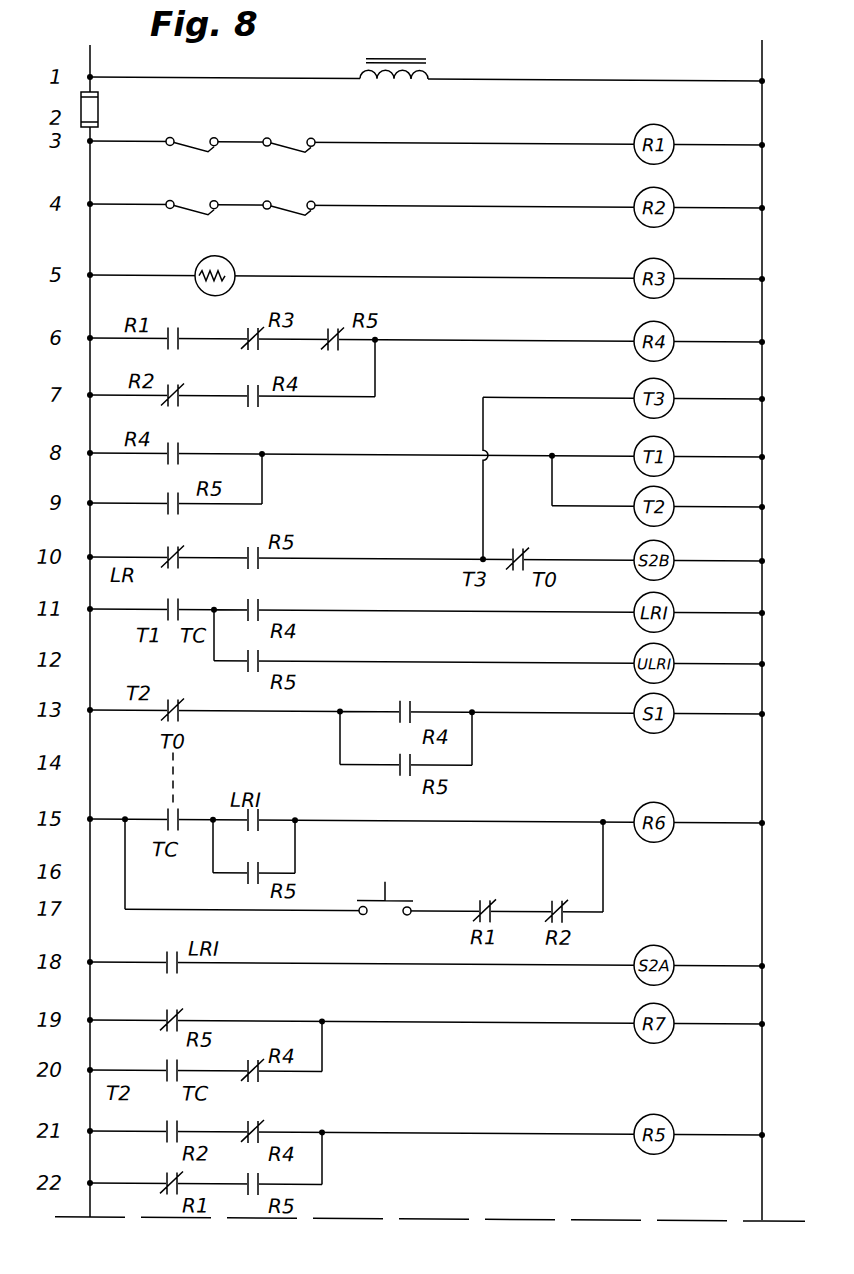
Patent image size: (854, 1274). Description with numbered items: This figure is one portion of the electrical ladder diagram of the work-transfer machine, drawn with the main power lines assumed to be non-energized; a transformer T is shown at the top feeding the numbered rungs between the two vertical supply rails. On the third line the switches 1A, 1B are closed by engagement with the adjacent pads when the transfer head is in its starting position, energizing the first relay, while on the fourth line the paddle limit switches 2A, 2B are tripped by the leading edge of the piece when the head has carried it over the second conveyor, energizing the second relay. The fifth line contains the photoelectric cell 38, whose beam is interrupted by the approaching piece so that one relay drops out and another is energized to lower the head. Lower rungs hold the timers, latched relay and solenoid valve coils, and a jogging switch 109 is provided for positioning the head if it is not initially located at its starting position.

The photoelectric cell 38 is at (231, 262).
The jogging switch 109 is at (385, 882).
The transformer T is at (394, 54).
The switch 1A is at (175, 131).
The switch 1B is at (281, 132).
The paddle limit switch 2A is at (174, 194).
The paddle limit switch 2B is at (281, 195).